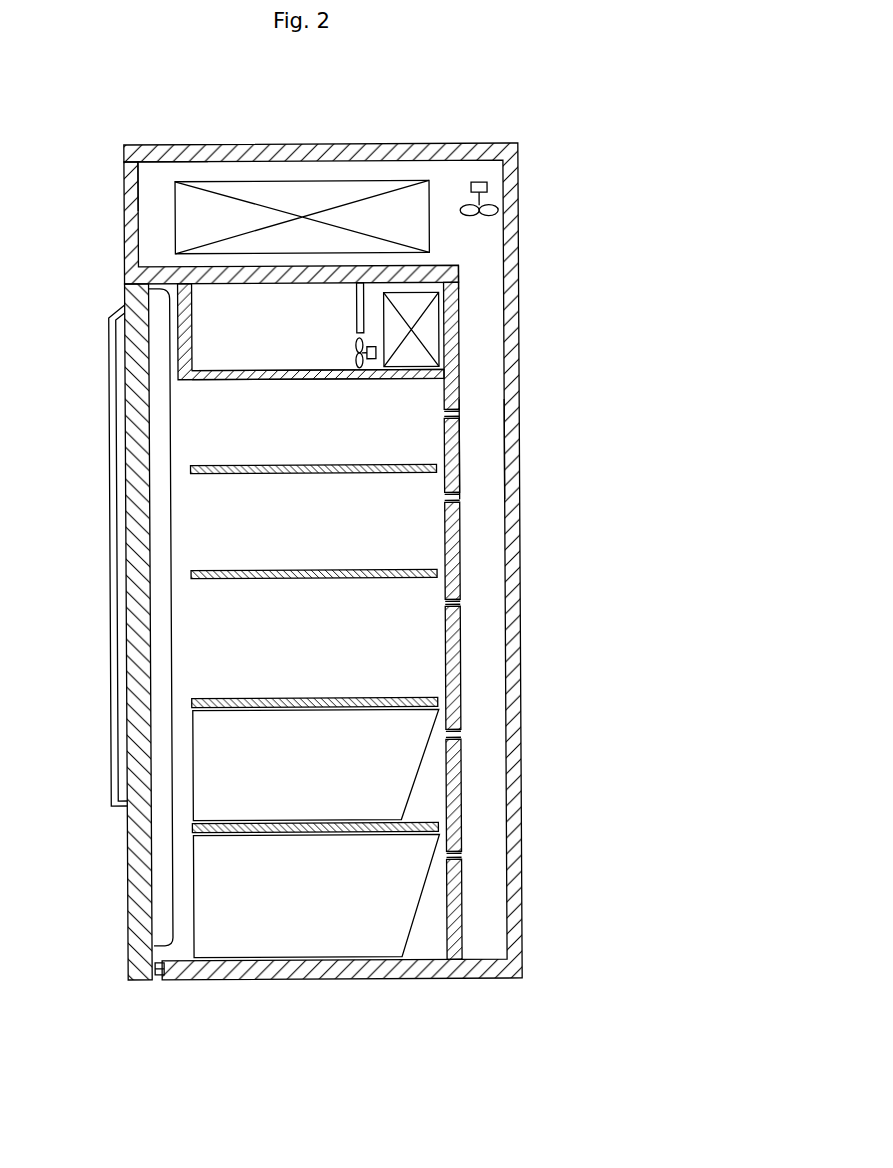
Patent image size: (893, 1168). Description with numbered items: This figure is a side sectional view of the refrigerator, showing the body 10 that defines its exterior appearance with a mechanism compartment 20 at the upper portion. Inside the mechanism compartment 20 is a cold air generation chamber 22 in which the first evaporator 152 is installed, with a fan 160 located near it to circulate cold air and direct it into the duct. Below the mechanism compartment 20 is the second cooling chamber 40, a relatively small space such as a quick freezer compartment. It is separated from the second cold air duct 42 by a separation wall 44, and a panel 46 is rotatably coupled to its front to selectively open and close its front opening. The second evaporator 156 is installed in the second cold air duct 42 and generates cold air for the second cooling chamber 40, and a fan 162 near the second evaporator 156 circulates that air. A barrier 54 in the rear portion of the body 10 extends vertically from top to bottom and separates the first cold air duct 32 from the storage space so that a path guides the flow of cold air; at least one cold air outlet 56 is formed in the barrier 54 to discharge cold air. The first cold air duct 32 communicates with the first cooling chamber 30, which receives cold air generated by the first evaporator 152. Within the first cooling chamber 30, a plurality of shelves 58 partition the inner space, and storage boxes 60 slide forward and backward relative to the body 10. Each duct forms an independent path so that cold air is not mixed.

The body 10 is at (520, 863).
The mechanism compartment 20 is at (377, 143).
The cold air generation chamber 22 is at (163, 166).
The first evaporator 152 is at (291, 181).
The fan 160 is at (490, 188).
The second cold air duct 42 is at (450, 270).
The separation wall 44 is at (357, 318).
The panel 46 is at (185, 337).
The second cooling chamber 40 is at (281, 336).
The second evaporator 156 is at (430, 321).
The fan 162 is at (378, 352).
The barrier 54 is at (457, 537).
The cold air outlet 56 is at (450, 733).
The first cold air duct 32 is at (470, 442).
The shelves 58 is at (191, 573).
The first cooling chamber 30 is at (301, 531).
The storage boxes 60 is at (213, 913).